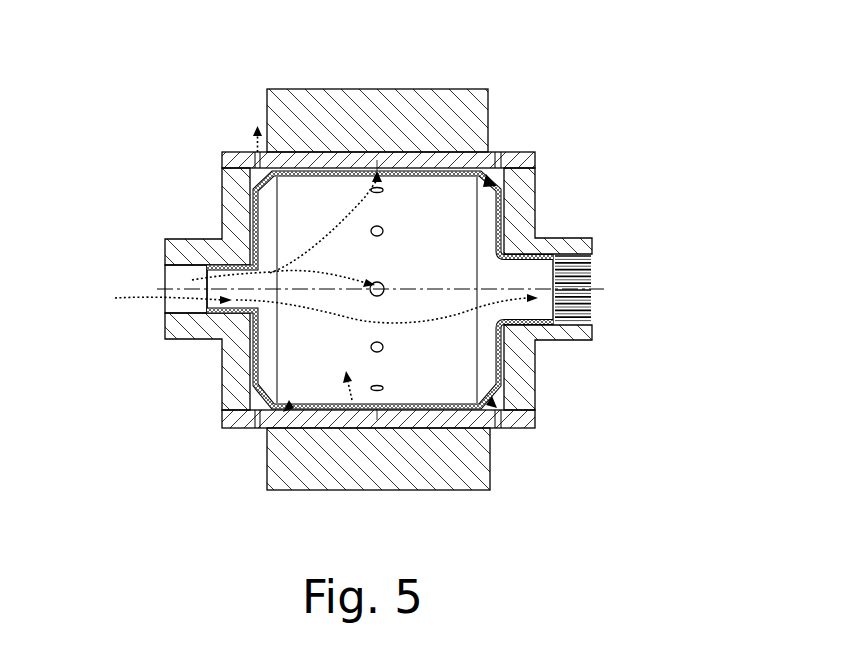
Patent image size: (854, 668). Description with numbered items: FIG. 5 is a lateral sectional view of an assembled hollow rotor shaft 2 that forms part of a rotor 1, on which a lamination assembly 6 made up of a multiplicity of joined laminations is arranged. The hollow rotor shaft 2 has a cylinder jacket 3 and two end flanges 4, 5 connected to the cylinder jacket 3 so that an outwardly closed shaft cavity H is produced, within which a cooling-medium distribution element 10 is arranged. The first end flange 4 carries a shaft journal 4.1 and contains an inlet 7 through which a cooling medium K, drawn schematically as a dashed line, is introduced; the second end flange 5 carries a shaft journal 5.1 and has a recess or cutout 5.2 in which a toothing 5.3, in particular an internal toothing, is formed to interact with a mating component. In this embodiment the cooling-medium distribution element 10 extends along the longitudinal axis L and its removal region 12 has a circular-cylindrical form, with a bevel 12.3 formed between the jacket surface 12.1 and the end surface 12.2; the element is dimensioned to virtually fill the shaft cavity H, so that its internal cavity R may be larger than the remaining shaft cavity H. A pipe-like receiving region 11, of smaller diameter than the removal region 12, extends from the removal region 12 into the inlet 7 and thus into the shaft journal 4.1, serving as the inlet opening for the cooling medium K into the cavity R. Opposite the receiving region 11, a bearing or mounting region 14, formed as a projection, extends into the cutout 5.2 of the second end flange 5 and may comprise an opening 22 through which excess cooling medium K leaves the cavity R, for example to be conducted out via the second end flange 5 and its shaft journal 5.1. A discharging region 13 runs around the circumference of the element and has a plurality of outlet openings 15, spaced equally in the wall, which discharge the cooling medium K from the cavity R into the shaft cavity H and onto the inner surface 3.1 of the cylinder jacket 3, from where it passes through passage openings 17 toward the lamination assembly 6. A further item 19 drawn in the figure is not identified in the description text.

The rotor 1 is at (492, 56).
The hollow rotor shaft 2 is at (176, 122).
The cylinder jacket 3 is at (375, 257).
The inner surface 3.1 is at (535, 412).
The end flange 4 is at (204, 278).
The shaft journal 4.1 is at (202, 243).
The end flange 5 is at (548, 278).
The shaft journal 5.1 is at (593, 325).
The recess 5.2 is at (553, 342).
The toothing 5.3 is at (593, 294).
The lamination assembly 6 is at (377, 100).
The inlet 7 is at (187, 308).
The cooling-medium distribution element 10 is at (533, 150).
The receiving region 11 is at (213, 317).
The removal region 12 is at (380, 351).
The jacket surface 12.1 is at (318, 178).
The end surface 12.2 is at (500, 230).
The bevel 12.3 is at (487, 180).
The discharging region 13 is at (380, 355).
The bearing region 14 is at (537, 355).
The outlet openings 15 is at (387, 293).
The passage openings 17 is at (496, 412).
The flow direction 19 is at (308, 304).
The opening 22 is at (556, 250).
The cooling medium K is at (257, 120).
The longitudinal axis L is at (163, 290).
The shaft cavity H is at (283, 413).
The cavity R is at (352, 402).